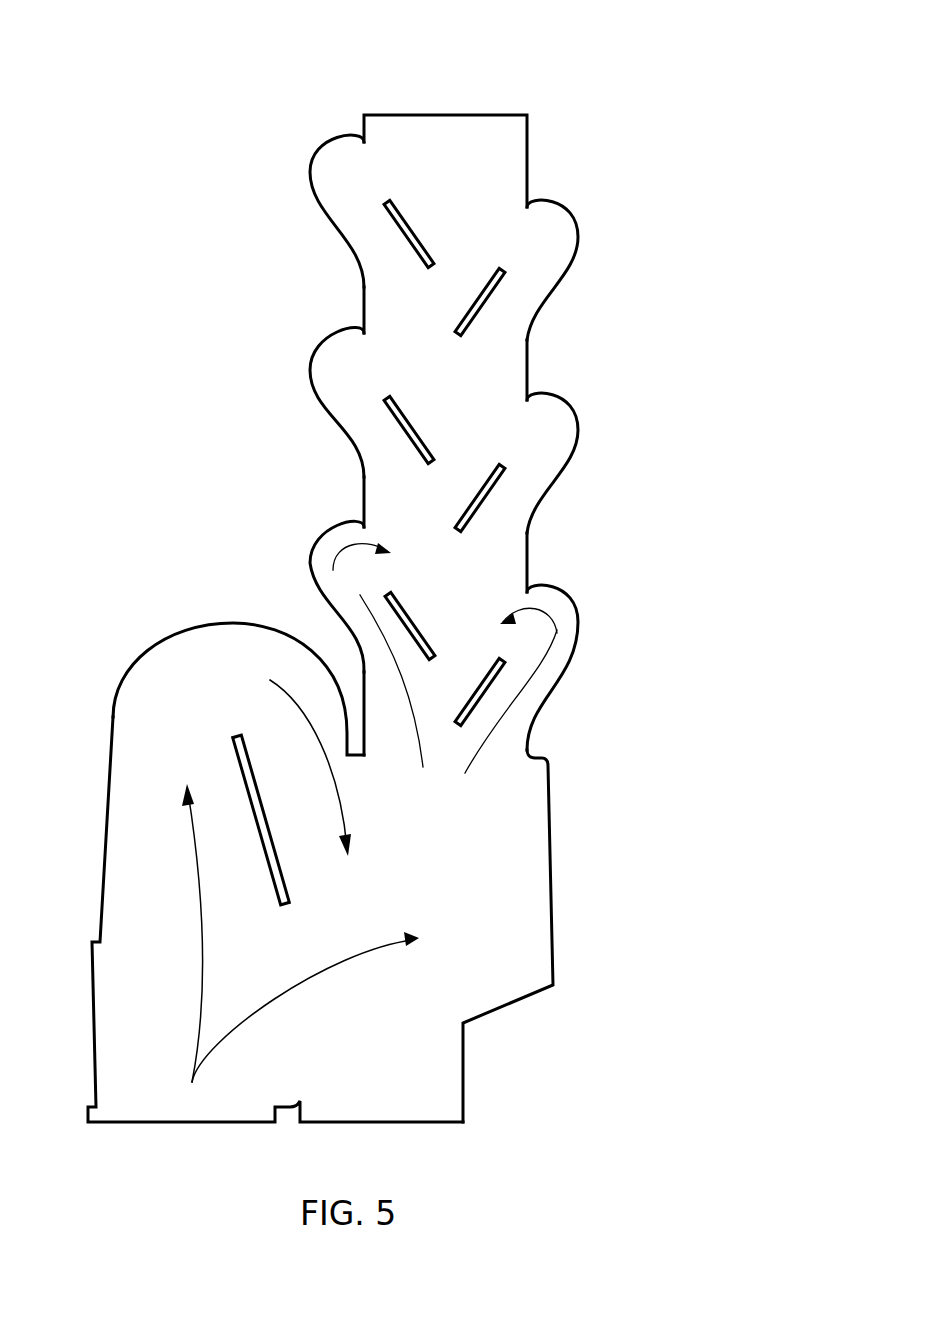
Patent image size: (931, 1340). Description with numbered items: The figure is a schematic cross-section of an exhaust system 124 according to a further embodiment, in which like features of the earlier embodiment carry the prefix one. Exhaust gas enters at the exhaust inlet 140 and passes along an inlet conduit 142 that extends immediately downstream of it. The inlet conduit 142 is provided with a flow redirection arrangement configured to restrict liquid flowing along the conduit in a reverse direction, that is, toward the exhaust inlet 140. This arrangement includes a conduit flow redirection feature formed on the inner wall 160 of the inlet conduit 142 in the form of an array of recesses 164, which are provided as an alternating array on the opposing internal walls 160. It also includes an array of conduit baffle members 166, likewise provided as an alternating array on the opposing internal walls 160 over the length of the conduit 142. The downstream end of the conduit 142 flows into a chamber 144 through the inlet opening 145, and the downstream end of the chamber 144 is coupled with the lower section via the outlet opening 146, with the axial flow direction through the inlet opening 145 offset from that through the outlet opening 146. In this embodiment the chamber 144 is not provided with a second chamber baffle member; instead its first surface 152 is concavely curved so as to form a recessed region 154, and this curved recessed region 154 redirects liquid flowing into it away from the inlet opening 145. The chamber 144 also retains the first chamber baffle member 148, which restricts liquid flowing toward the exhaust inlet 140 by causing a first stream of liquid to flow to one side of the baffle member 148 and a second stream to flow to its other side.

The exhaust system 124 is at (116, 91).
The exhaust inlet 140 is at (460, 113).
The inlet conduit 142 is at (433, 357).
The chamber 144 is at (415, 843).
The inlet opening 145 is at (458, 743).
The outlet opening 146 is at (198, 1122).
The first chamber baffle member 148 is at (250, 787).
The first surface 152 is at (160, 645).
The recessed region 154 is at (215, 650).
The inner wall 160 is at (528, 348).
The recesses 164 is at (333, 357).
The conduit baffle members 166 is at (487, 493).